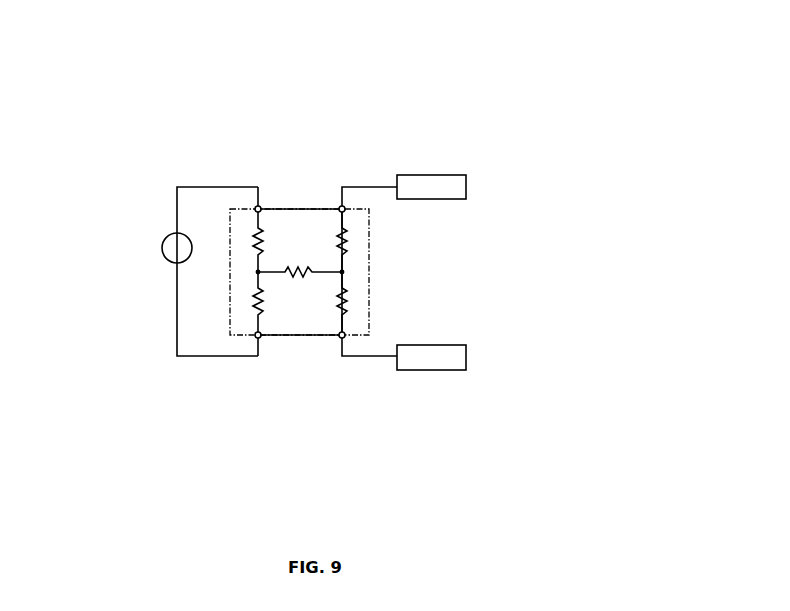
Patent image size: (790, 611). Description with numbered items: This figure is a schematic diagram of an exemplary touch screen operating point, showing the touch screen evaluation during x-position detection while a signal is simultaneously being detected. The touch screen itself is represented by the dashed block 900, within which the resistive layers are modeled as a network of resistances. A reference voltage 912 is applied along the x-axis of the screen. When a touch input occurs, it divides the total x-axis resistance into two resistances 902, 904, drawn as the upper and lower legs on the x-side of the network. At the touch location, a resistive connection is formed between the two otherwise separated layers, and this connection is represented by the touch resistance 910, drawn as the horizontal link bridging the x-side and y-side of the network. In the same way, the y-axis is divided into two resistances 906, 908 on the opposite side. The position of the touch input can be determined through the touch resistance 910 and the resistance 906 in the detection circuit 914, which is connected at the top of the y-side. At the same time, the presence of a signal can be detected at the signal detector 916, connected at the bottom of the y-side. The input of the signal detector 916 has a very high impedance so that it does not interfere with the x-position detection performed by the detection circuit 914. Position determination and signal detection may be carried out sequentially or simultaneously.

The touch panel 900 is at (300, 209).
The x-axis resistance 902 is at (253, 240).
The x-axis resistance 904 is at (257, 316).
The y-axis resistance 906 is at (344, 240).
The y-axis resistance 908 is at (344, 300).
The touch resistance 910 is at (298, 280).
The reference voltage 912 is at (162, 250).
The detection circuit 914 is at (430, 175).
The signal detector 916 is at (432, 370).